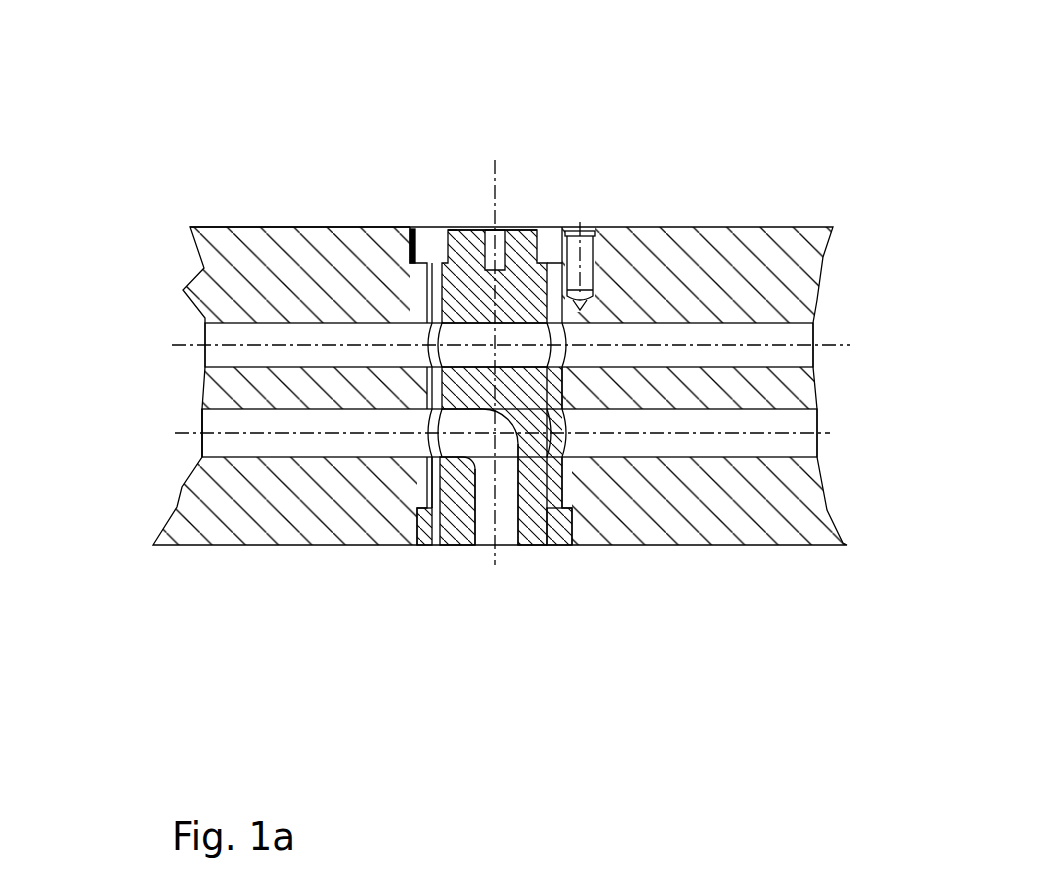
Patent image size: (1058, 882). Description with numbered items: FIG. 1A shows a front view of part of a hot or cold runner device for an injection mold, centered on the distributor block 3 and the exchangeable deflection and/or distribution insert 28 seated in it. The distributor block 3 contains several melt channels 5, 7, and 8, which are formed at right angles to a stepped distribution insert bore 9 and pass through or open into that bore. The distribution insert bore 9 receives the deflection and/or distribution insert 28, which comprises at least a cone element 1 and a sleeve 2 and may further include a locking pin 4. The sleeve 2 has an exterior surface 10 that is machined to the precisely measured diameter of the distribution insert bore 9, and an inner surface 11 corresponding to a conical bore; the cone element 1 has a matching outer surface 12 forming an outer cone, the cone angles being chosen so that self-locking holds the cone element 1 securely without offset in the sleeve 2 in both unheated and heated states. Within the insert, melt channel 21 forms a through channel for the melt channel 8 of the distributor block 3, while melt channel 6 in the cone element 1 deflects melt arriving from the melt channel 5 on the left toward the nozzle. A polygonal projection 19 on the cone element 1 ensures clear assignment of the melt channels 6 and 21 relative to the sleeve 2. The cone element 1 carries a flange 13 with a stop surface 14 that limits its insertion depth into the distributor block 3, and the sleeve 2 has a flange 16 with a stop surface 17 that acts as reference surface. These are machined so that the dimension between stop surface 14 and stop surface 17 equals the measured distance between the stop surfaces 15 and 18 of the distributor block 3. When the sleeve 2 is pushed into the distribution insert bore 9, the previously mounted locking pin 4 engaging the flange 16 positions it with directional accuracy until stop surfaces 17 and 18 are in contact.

The cone element 1 is at (475, 257).
The sleeve 2 is at (437, 387).
The distributor block 3 is at (757, 507).
The locking pin 4 is at (583, 247).
The melt channel 5 is at (208, 422).
The melt channel 6 is at (487, 508).
The melt channel 7 is at (773, 423).
The melt channel 8 is at (793, 337).
The distribution insert bore 9 is at (535, 540).
The exterior surface 10 is at (565, 392).
The inner surface 11 is at (427, 522).
The outer surface 12 is at (425, 482).
The flange 13 is at (553, 527).
The stop surface 14 is at (568, 495).
The stop surface 15 is at (462, 487).
The flange 16 is at (545, 402).
The stop surface 17 is at (400, 310).
The stop surface 18 is at (430, 247).
The polygonal projection 19 is at (458, 235).
The melt channel 21 is at (480, 330).
The deflection and/or distribution insert 28 is at (519, 198).